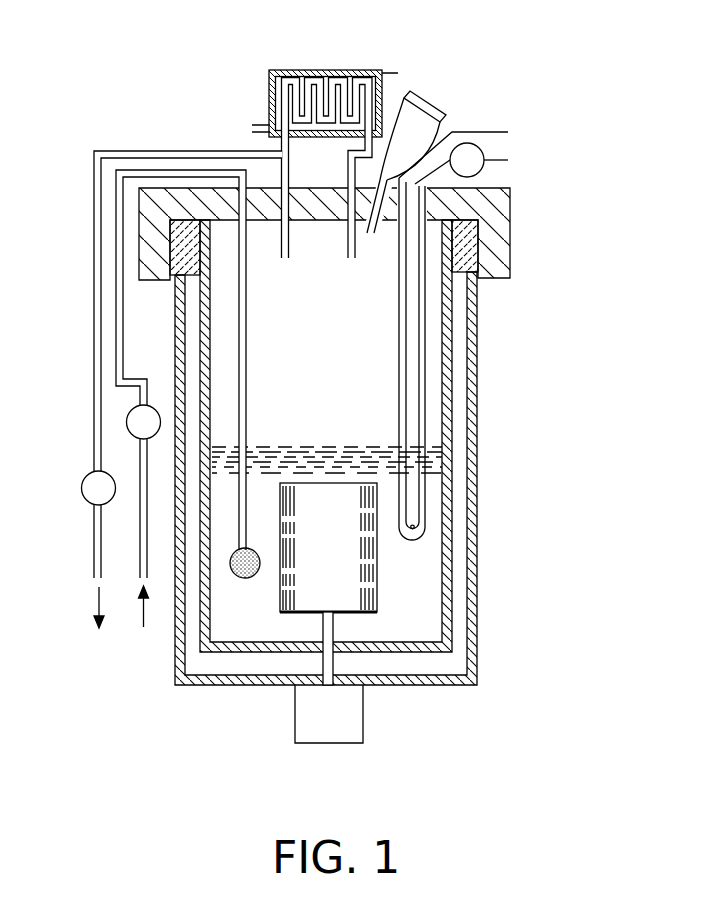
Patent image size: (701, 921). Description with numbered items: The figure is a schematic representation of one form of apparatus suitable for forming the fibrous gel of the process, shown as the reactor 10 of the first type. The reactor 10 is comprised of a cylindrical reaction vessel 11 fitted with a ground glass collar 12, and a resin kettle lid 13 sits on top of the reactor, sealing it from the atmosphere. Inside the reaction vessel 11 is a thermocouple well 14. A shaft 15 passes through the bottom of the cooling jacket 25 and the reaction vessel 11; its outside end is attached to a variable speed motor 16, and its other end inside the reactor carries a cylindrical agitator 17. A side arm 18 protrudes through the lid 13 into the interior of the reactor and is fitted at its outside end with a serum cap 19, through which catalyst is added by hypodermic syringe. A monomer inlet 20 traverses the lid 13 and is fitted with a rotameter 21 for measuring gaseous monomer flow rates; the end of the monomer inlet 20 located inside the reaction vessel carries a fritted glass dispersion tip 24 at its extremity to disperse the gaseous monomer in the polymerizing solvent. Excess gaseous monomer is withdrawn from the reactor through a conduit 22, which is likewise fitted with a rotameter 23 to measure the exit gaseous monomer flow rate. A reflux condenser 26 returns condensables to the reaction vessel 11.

The reactor 10 is at (314, 385).
The cylindrical reaction vessel 11 is at (450, 427).
The ground glass collar 12 is at (470, 250).
The resin kettle lid 13 is at (498, 198).
The thermocouple well 14 is at (427, 323).
The shaft 15 is at (335, 661).
The variable speed motor 16 is at (300, 723).
The cylindrical agitator 17 is at (372, 612).
The side arm 18 is at (428, 144).
The serum cap 19 is at (412, 93).
The monomer inlet 20 is at (190, 401).
The rotameter 21 is at (146, 405).
The conduit 22 is at (161, 369).
The rotameter 23 is at (92, 505).
The fritted glass dispersion tip 24 is at (235, 578).
The cooling jacket 25 is at (475, 480).
The reflux condenser 26 is at (328, 70).